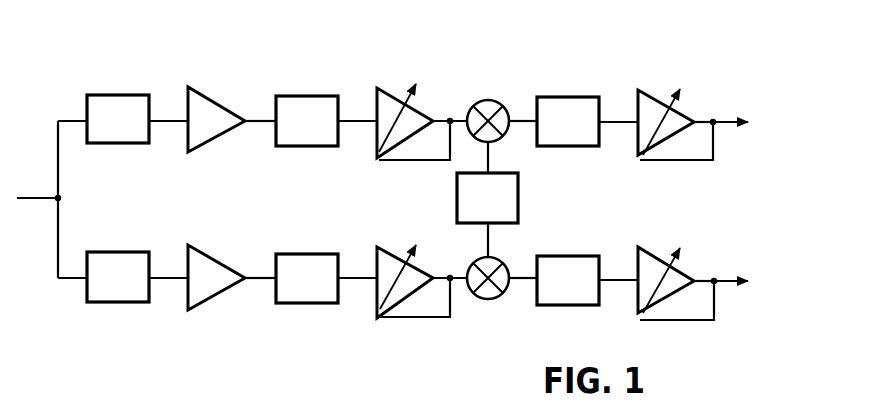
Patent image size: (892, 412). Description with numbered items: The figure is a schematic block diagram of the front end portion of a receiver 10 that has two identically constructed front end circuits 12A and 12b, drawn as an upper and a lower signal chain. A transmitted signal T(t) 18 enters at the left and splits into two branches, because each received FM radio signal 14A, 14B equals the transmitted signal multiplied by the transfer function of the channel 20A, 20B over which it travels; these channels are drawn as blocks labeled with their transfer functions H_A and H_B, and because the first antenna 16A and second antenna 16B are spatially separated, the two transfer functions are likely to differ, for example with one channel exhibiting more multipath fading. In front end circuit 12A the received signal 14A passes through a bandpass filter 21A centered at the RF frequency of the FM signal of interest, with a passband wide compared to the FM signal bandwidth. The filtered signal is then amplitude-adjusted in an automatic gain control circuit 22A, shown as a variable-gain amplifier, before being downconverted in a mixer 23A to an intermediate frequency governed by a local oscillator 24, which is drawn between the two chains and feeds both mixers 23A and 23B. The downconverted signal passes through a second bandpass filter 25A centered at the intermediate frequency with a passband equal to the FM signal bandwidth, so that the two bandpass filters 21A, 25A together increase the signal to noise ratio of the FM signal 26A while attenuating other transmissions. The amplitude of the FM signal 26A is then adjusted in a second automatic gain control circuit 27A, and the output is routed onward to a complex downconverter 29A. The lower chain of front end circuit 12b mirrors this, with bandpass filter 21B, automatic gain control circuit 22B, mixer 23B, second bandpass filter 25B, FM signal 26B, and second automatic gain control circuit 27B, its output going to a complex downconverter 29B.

The receiver 10 is at (493, 46).
The front end circuit 12A is at (72, 91).
The front end circuit 12b is at (70, 325).
The received FM radio signal 14A is at (259, 124).
The received FM radio signal 14B is at (258, 276).
The first antenna 16A is at (217, 103).
The second antenna 16B is at (216, 298).
The transmitted signal T(t) 18 is at (35, 201).
The channel 20A is at (122, 91).
The channel 20B is at (108, 303).
The bandpass filter 21A is at (316, 97).
The bandpass filter 21B is at (318, 305).
The automatic gain control circuit 22A is at (386, 88).
The automatic gain control circuit 22B is at (390, 250).
The mixer 23A is at (482, 100).
The mixer 23B is at (490, 300).
The local oscillator 24 is at (518, 201).
The second bandpass filter 25A is at (557, 98).
The second bandpass filter 25B is at (575, 306).
The FM signal 26A is at (613, 129).
The FM signal 26B is at (614, 277).
The second automatic gain control circuit 27A is at (645, 91).
The second automatic gain control circuit 27B is at (655, 255).
The complex downconverter 29A is at (770, 134).
The complex downconverter 29B is at (770, 292).